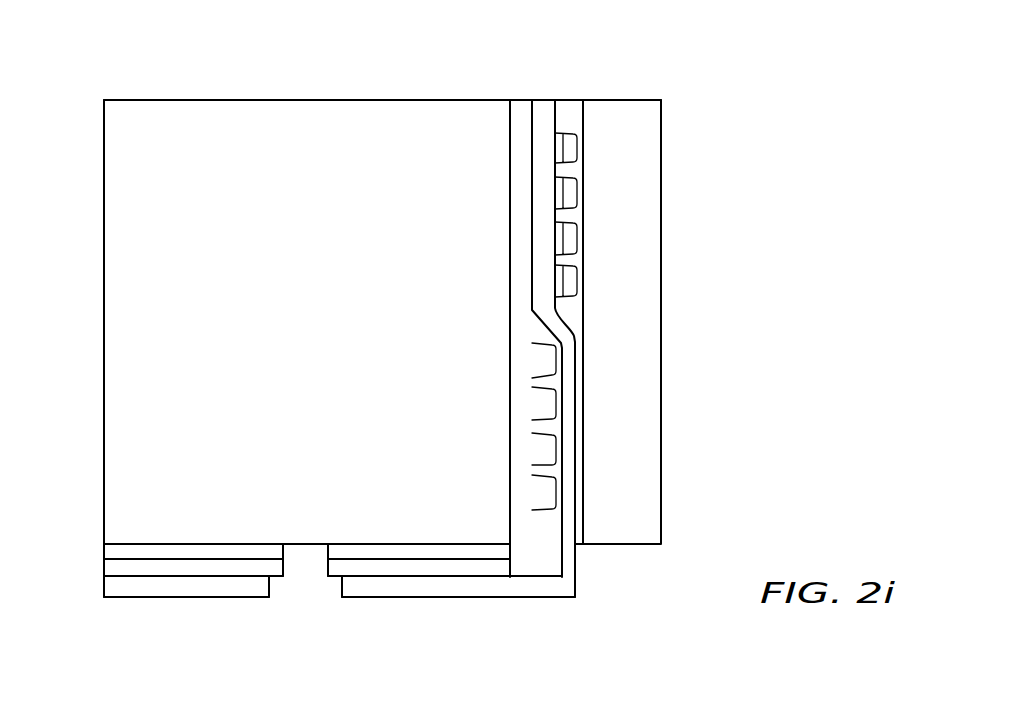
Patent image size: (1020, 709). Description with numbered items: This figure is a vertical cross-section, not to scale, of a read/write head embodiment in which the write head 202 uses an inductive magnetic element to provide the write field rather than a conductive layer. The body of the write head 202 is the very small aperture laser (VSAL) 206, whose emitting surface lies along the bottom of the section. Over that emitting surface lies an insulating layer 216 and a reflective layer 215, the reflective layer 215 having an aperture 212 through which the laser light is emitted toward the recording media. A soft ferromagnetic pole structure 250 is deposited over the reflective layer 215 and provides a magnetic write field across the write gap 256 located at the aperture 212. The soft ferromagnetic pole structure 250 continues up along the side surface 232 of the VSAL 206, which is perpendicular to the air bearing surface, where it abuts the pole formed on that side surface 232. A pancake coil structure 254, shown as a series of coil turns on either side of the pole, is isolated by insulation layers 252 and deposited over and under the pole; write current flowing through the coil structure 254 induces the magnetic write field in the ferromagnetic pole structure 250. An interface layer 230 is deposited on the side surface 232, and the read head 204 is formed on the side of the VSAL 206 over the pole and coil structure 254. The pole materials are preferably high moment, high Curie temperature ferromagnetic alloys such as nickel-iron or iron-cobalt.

The write head 202 is at (226, 100).
The read head 204 is at (661, 253).
The very small aperture laser (VSAL) 206 is at (323, 291).
The aperture 212 is at (328, 532).
The reflective layer 215 is at (104, 566).
The insulating layer 216 is at (104, 551).
The interface layer 230 is at (520, 100).
The side surface 232 is at (510, 150).
The soft ferromagnetic pole structure 250 is at (543, 100).
The insulation layers 252 is at (577, 100).
The coil structure 254 is at (578, 189).
The write gap 256 is at (342, 608).